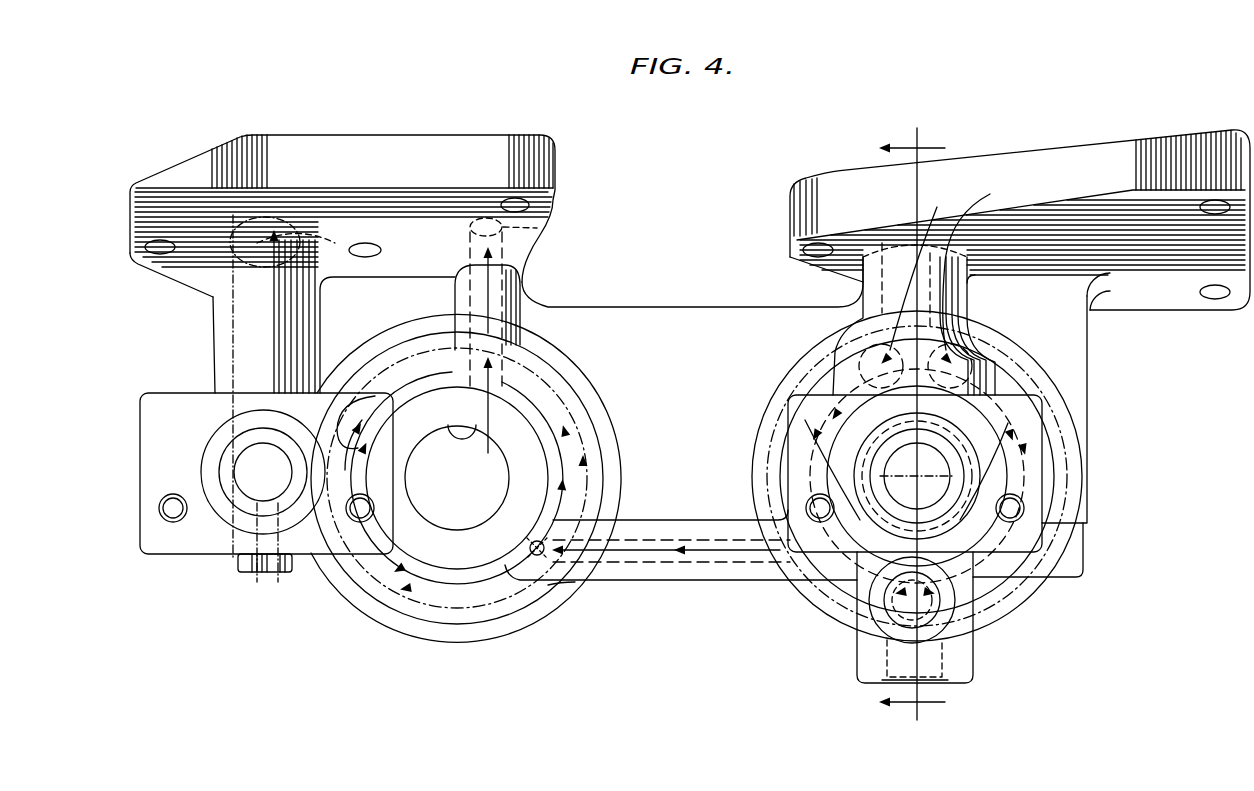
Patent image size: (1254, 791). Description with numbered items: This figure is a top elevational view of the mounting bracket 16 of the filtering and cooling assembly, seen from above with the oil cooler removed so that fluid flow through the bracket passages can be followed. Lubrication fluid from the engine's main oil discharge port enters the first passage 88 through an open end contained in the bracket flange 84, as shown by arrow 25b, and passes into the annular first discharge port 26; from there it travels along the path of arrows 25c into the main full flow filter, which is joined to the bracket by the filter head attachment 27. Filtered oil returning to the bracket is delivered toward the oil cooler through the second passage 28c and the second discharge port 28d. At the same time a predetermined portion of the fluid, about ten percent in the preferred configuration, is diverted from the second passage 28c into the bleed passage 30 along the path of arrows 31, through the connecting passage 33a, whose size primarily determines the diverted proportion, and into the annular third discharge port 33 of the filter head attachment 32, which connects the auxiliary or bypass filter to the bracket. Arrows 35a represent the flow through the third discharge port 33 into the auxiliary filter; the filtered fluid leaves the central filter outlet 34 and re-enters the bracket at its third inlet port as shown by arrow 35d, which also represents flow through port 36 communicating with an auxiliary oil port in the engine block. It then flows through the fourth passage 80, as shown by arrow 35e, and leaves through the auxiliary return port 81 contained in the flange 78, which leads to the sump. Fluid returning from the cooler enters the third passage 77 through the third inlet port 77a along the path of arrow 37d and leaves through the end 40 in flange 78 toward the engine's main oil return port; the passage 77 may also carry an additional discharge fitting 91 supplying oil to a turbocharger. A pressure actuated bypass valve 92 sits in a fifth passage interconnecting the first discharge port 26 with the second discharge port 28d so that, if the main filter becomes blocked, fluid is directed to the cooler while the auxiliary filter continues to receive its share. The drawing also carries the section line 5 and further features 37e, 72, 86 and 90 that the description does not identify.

The section line 5- 5 is at (912, 426).
The bracket 16 is at (664, 298).
The arrow 25b is at (943, 278).
The arrows 25c is at (810, 478).
The first discharge port 26 is at (1034, 481).
The filter head attachment 27 is at (1040, 590).
The second passage 28c is at (933, 475).
The second discharge port 28d is at (940, 512).
The bleed passage 30 is at (700, 560).
The arrows 31 is at (623, 557).
The filter head attachment 32 is at (466, 642).
The third discharge port 33 is at (505, 590).
The connecting passage 33a is at (528, 543).
The central filter outlet 34 is at (470, 487).
The arrows 35a is at (365, 410).
The arrow 35d is at (497, 421).
The arrow 35e is at (493, 297).
The port 36 is at (460, 428).
The arrow 37d is at (280, 372).
The passage 37e is at (294, 229).
The end of third passage 40 is at (282, 215).
The mounting hole 72 is at (173, 494).
The third passage 77 is at (238, 314).
The third inlet port 77a is at (243, 497).
The bracket flange 78 is at (530, 150).
The fourth passage 80 is at (470, 298).
The auxiliary return port 81 is at (542, 227).
The bracket flange 84 is at (1165, 150).
The passage 86 is at (921, 266).
The first passage 88 is at (893, 297).
The junction 90 is at (553, 587).
The additional discharge fitting 91 is at (245, 563).
The pressure actuated bypass valve 92 is at (945, 620).